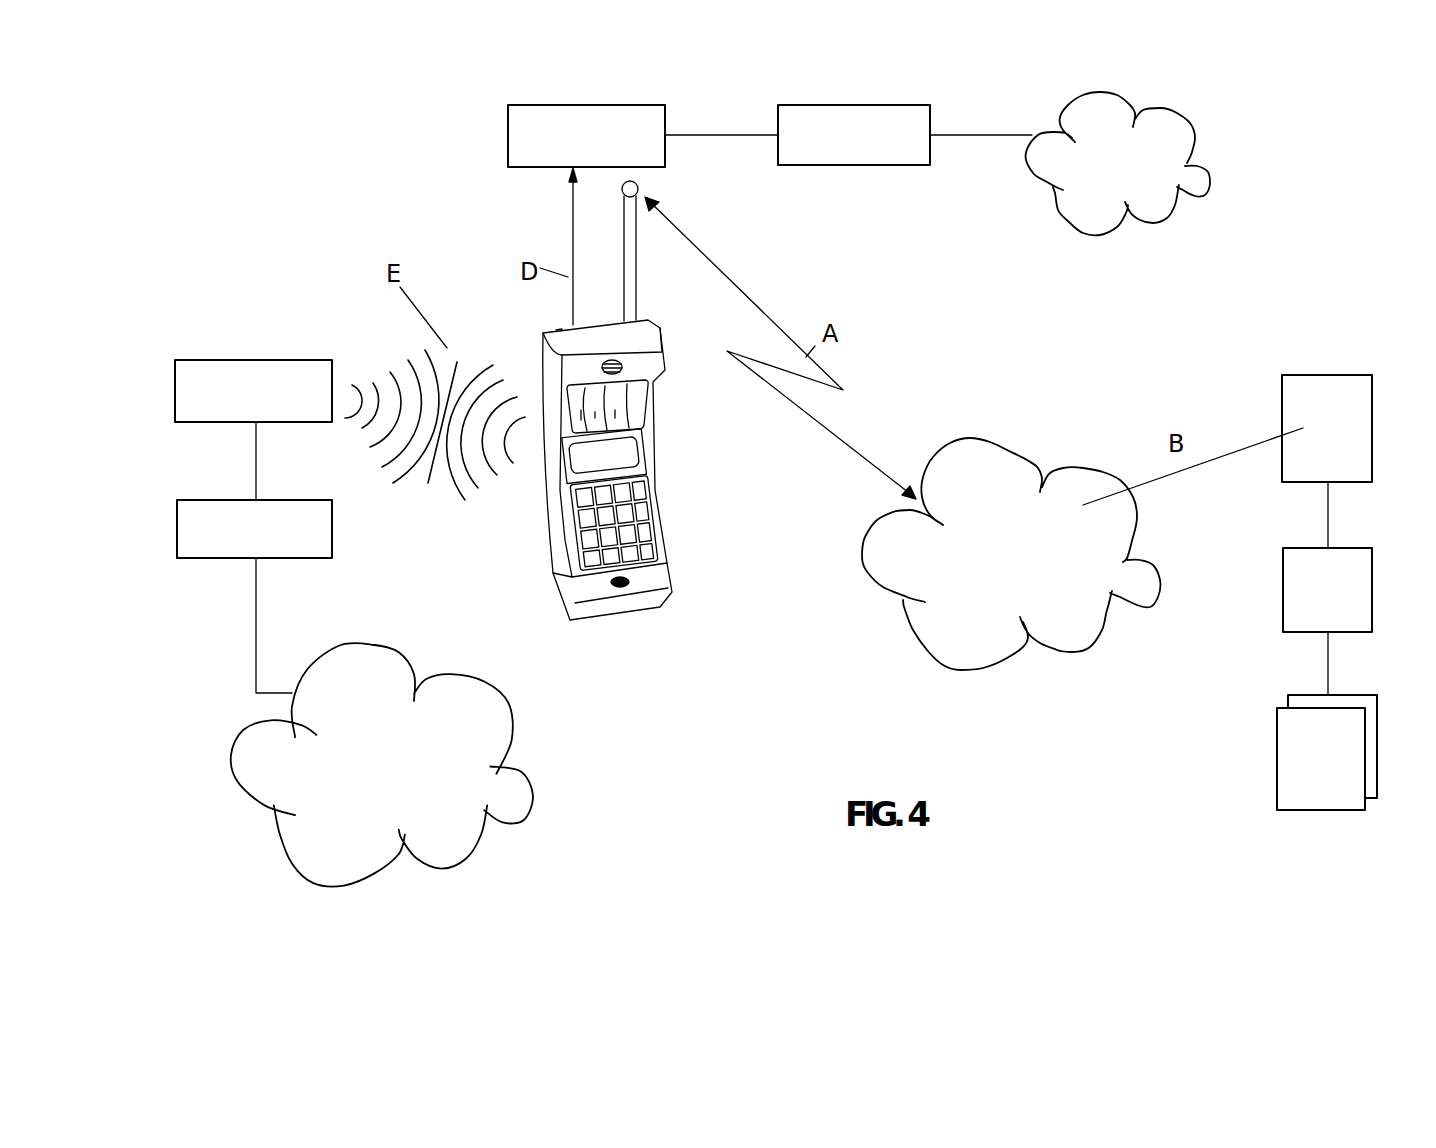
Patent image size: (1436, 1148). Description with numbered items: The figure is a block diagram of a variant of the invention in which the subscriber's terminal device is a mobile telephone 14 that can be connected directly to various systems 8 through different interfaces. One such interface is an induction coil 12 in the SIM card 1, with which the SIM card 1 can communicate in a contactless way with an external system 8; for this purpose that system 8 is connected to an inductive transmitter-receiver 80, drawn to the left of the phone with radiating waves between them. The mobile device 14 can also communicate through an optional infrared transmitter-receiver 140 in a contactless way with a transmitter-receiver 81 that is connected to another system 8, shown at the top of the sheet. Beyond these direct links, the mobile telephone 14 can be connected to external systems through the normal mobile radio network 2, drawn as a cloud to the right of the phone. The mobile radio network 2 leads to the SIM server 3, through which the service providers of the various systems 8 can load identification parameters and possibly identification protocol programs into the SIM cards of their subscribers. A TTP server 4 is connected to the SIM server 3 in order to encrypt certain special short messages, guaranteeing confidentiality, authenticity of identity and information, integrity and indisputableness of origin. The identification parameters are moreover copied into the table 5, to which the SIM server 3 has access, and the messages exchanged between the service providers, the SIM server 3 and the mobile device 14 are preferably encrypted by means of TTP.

The SIM card 1 is at (640, 438).
The mobile radio network 2 is at (943, 652).
The SIM server 3 is at (1360, 418).
The TTP server 4 is at (1365, 578).
The table 5 is at (1378, 707).
The system 8 is at (812, 112).
The induction coil 12 is at (650, 462).
The mobile telephone 14 is at (665, 597).
The inductive transmitter-receiver 80 is at (235, 378).
The transmitter-receiver 81 is at (508, 122).
The infrared transmitter-receiver 140 is at (562, 327).